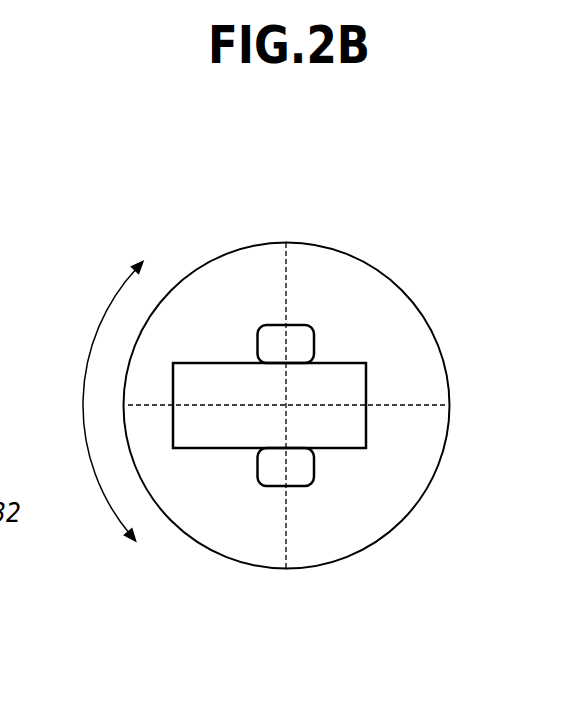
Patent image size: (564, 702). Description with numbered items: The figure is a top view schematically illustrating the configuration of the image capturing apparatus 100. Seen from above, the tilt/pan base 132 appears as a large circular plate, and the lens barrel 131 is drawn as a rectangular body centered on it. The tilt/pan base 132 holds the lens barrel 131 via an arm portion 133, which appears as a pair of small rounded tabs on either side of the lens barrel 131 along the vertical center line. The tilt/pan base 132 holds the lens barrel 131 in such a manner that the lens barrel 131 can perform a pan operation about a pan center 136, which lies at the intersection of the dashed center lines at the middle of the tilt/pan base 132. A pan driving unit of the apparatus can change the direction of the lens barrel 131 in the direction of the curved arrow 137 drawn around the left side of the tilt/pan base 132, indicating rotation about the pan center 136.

The image capturing apparatus 100 is at (405, 193).
The lens barrel 131 is at (210, 363).
The tilt/pan base 132 is at (197, 542).
The arm portion 133 is at (295, 327).
The pan center 136 is at (286, 404).
The arrow 137 is at (98, 318).